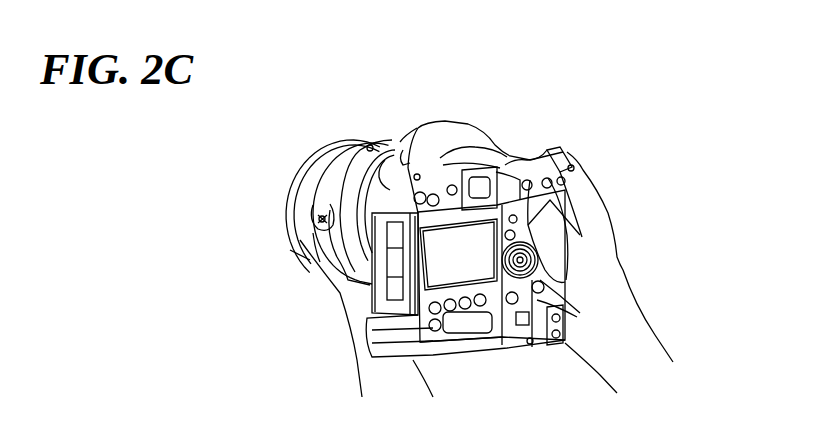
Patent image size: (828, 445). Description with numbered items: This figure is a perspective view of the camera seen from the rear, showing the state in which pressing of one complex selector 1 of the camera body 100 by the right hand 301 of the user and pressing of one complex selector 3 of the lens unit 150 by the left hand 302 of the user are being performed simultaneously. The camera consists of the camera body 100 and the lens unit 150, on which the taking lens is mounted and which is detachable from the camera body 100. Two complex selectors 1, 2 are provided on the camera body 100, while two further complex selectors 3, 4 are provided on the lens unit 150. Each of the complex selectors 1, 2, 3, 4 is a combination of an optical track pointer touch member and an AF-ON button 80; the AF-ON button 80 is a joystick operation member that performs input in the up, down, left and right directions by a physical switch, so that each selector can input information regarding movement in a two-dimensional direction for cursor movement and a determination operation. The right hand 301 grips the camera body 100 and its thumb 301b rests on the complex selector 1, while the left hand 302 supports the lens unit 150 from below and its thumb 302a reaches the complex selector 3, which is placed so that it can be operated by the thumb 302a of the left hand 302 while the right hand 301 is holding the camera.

The complex selector 1 is at (563, 150).
The complex selector 2 is at (558, 350).
The complex selector 3 is at (302, 240).
The complex selector 4 is at (380, 150).
The AF-ON button 80 is at (369, 145).
The camera body 100 is at (413, 140).
The lens unit 150 is at (331, 148).
The right hand 301 is at (623, 270).
The thumb 301b is at (509, 155).
The left hand 302 is at (348, 292).
The thumb 302a is at (316, 203).